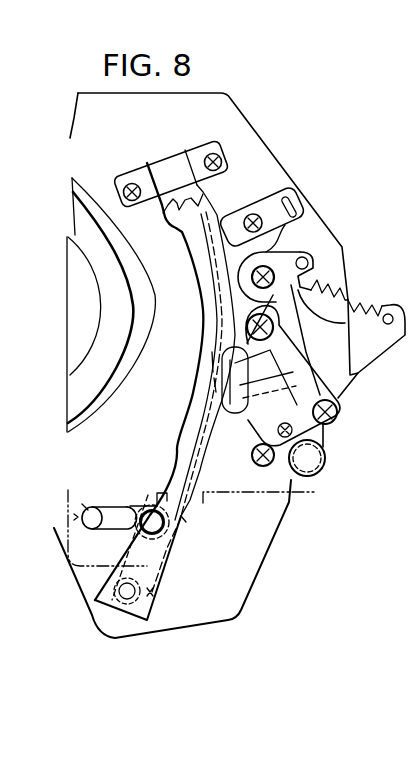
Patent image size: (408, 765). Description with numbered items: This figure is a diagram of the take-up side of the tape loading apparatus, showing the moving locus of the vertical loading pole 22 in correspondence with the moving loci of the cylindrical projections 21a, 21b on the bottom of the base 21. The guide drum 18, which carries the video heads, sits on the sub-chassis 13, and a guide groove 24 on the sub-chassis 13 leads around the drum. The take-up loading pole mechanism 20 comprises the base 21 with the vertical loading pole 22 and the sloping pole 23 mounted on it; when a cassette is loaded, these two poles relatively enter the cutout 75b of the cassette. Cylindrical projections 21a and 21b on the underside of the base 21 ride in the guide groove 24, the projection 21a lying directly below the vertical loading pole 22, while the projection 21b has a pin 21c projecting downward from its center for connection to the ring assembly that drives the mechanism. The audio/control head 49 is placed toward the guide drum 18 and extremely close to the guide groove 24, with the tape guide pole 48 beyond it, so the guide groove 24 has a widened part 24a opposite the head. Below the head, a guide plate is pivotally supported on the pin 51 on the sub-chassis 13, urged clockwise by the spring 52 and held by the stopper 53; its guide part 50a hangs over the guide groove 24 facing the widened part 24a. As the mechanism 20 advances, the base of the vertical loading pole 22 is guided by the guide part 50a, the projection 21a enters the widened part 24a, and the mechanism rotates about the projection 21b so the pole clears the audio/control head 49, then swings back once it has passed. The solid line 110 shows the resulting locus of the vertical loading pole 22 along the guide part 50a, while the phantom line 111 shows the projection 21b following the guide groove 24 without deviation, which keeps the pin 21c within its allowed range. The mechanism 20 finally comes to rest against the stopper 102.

The sub-chassis 13 is at (234, 118).
The guide drum 18 is at (80, 220).
The stopper 102 is at (207, 192).
The guide groove 24 is at (200, 272).
The widened part 24a is at (200, 343).
The solid line 110 is at (212, 363).
The phantom line 111 is at (216, 385).
The guide part 50a is at (210, 398).
The pin 51 is at (276, 243).
The spring 52 is at (352, 292).
The stopper 53 is at (270, 318).
The audio/control head 49 is at (255, 422).
The tape guide pole 48 is at (325, 457).
The take-up loading pole mechanism 20 is at (84, 505).
The sloping pole 23 is at (115, 506).
The vertical loading pole 22 is at (148, 507).
The cutout 75b is at (74, 517).
The base 21 is at (172, 565).
The cylindrical projection 21a is at (185, 517).
The cylindrical projection 21b is at (154, 592).
The pin 21c is at (119, 592).